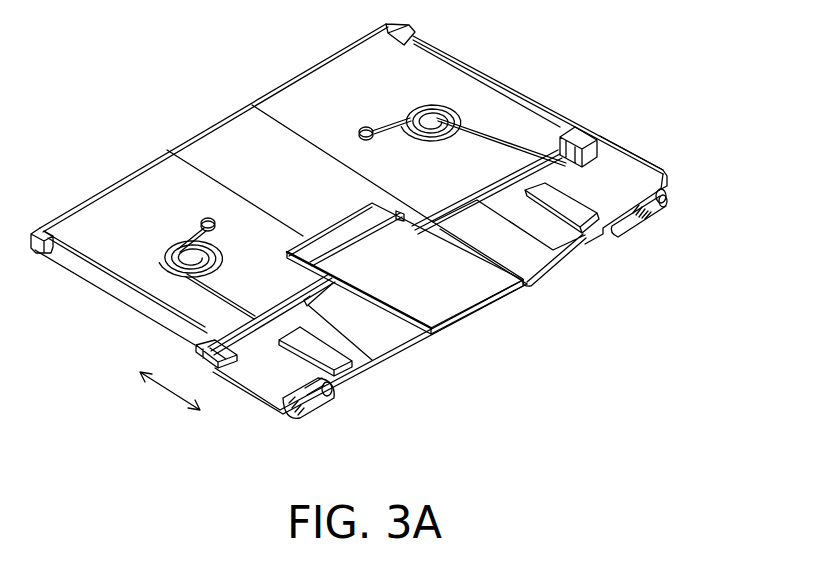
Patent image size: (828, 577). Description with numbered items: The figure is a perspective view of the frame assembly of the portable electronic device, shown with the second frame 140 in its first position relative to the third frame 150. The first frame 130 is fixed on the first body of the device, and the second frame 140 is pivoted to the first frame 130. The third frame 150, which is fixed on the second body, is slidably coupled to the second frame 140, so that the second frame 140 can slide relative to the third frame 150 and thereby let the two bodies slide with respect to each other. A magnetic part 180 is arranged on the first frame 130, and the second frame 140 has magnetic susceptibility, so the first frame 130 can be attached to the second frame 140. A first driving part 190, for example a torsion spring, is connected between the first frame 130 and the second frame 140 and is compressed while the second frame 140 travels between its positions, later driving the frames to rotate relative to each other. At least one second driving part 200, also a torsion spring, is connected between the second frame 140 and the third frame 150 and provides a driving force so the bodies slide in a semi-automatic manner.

The first frame 130 is at (608, 192).
The second frame 140 is at (613, 150).
The third frame 150 is at (420, 78).
The magnetic part 180 is at (378, 325).
The first driving part 190 is at (307, 417).
The second driving part 200 is at (487, 138).